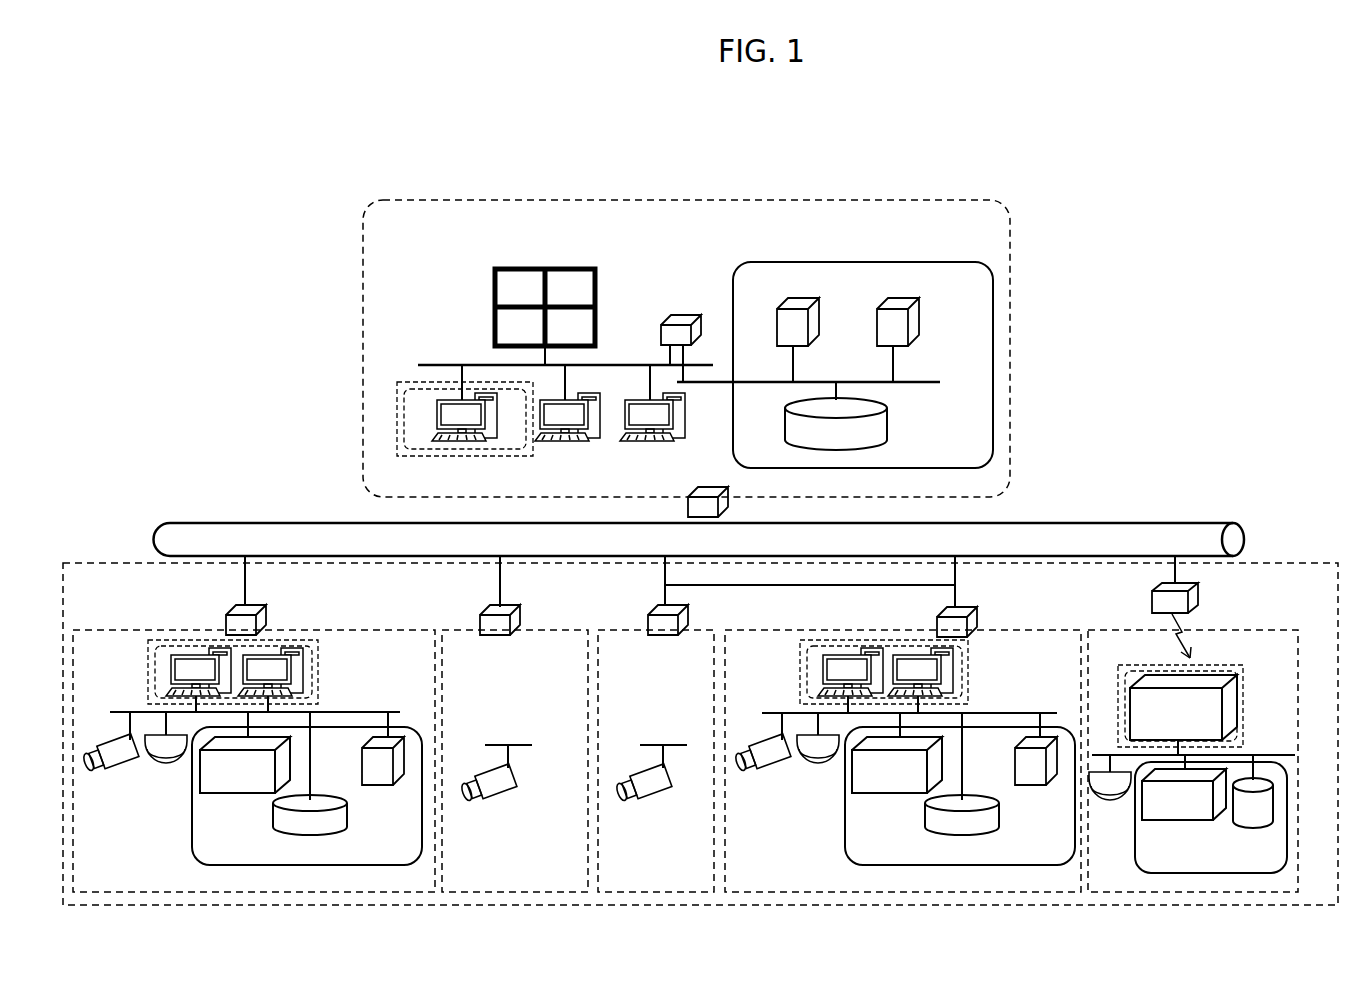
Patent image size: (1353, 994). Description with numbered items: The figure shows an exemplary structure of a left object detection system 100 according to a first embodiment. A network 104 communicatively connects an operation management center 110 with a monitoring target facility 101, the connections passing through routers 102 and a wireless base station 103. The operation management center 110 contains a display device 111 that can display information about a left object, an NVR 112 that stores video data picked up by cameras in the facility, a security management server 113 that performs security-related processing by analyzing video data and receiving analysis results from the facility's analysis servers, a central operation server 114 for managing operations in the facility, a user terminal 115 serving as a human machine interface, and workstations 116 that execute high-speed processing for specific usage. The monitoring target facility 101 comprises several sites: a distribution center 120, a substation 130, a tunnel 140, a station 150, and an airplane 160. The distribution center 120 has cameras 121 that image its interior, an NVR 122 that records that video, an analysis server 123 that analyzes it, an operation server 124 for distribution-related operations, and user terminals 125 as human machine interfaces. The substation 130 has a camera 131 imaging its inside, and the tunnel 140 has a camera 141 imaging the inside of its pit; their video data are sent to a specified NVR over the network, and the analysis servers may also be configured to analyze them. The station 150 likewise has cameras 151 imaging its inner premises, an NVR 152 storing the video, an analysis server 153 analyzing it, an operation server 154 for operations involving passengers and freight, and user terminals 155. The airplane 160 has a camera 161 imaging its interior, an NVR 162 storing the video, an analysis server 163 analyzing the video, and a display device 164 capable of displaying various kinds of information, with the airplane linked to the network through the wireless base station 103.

The left object detection system 100 is at (1094, 240).
The facility 101 is at (1262, 560).
The router 102 is at (690, 316).
The wireless base station 103 is at (1198, 606).
The network 104 is at (1153, 524).
The operation management center 110 is at (866, 198).
The display device 111 is at (598, 283).
The NVR 112 is at (888, 428).
The security management server 113 is at (820, 322).
The central operation server 114 is at (920, 322).
The user terminal 115 is at (434, 396).
The workstation 116 is at (570, 442).
The distribution center 120 is at (350, 630).
The camera 121 is at (128, 768).
The NVR 122 is at (324, 792).
The analysis server 123 is at (250, 794).
The operation server 124 is at (390, 789).
The user terminal 125 is at (191, 650).
The substation 130 is at (540, 630).
The camera 131 is at (500, 798).
The tunnel 140 is at (617, 630).
The camera 141 is at (653, 798).
The station 150 is at (995, 630).
The camera 151 is at (780, 768).
The NVR 152 is at (977, 794).
The analysis server 153 is at (900, 794).
The operation server 154 is at (1042, 789).
The user terminal 155 is at (846, 650).
The airplane 160 is at (1262, 630).
The camera 161 is at (1110, 806).
The NVR 162 is at (1256, 830).
The analysis server 163 is at (1200, 821).
The display device 164 is at (1214, 690).